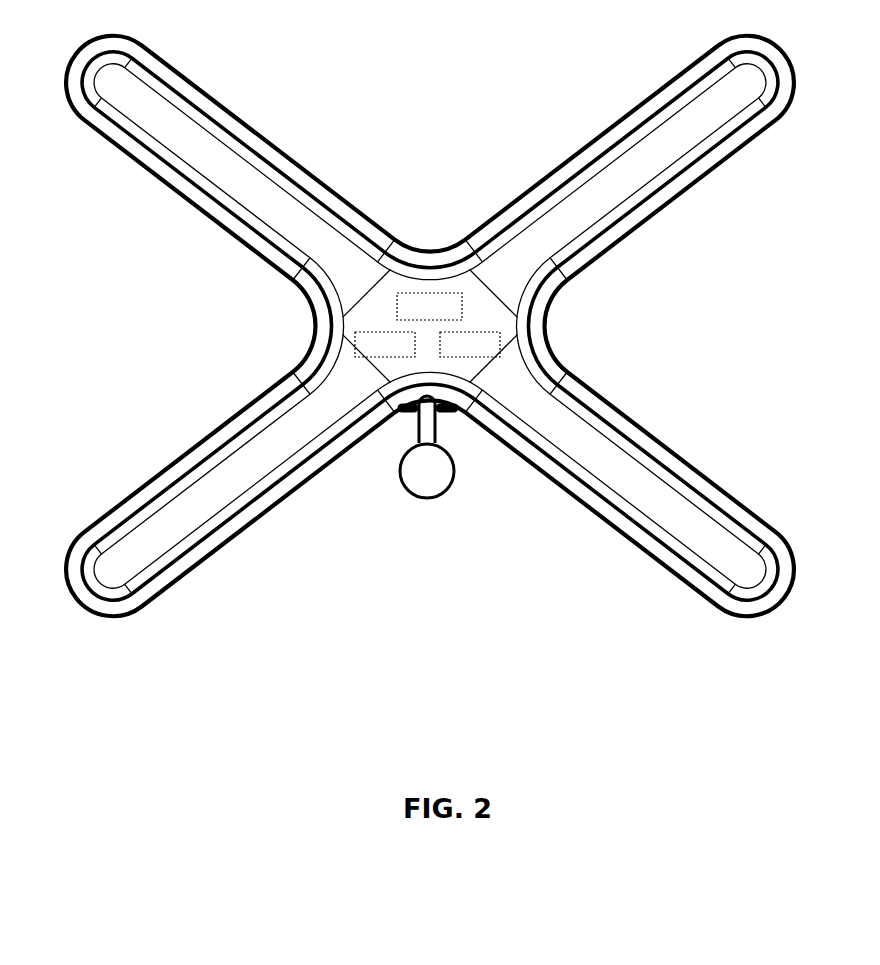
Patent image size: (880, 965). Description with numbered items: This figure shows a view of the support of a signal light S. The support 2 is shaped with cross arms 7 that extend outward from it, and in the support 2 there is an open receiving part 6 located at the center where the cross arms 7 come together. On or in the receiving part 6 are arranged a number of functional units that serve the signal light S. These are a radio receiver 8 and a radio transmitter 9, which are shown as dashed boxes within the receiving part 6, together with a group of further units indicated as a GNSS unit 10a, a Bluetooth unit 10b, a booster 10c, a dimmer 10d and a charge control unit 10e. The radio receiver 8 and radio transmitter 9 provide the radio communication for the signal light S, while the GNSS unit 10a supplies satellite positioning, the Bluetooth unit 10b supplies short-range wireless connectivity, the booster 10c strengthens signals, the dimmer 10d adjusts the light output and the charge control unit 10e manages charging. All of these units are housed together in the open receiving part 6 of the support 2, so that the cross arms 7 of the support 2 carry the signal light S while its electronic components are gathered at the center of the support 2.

The support 2 is at (262, 150).
The cross arms 7 is at (177, 130).
The receiving part 6 is at (405, 323).
The radio receiver 8 is at (382, 346).
The radio transmitter 9 is at (470, 346).
The GNSS unit 10a is at (440, 244).
The Bluetooth unit 10b is at (440, 244).
The booster 10c is at (440, 244).
The dimmer 10d is at (440, 244).
The charge control unit 10e is at (430, 310).
The signal light S is at (692, 313).